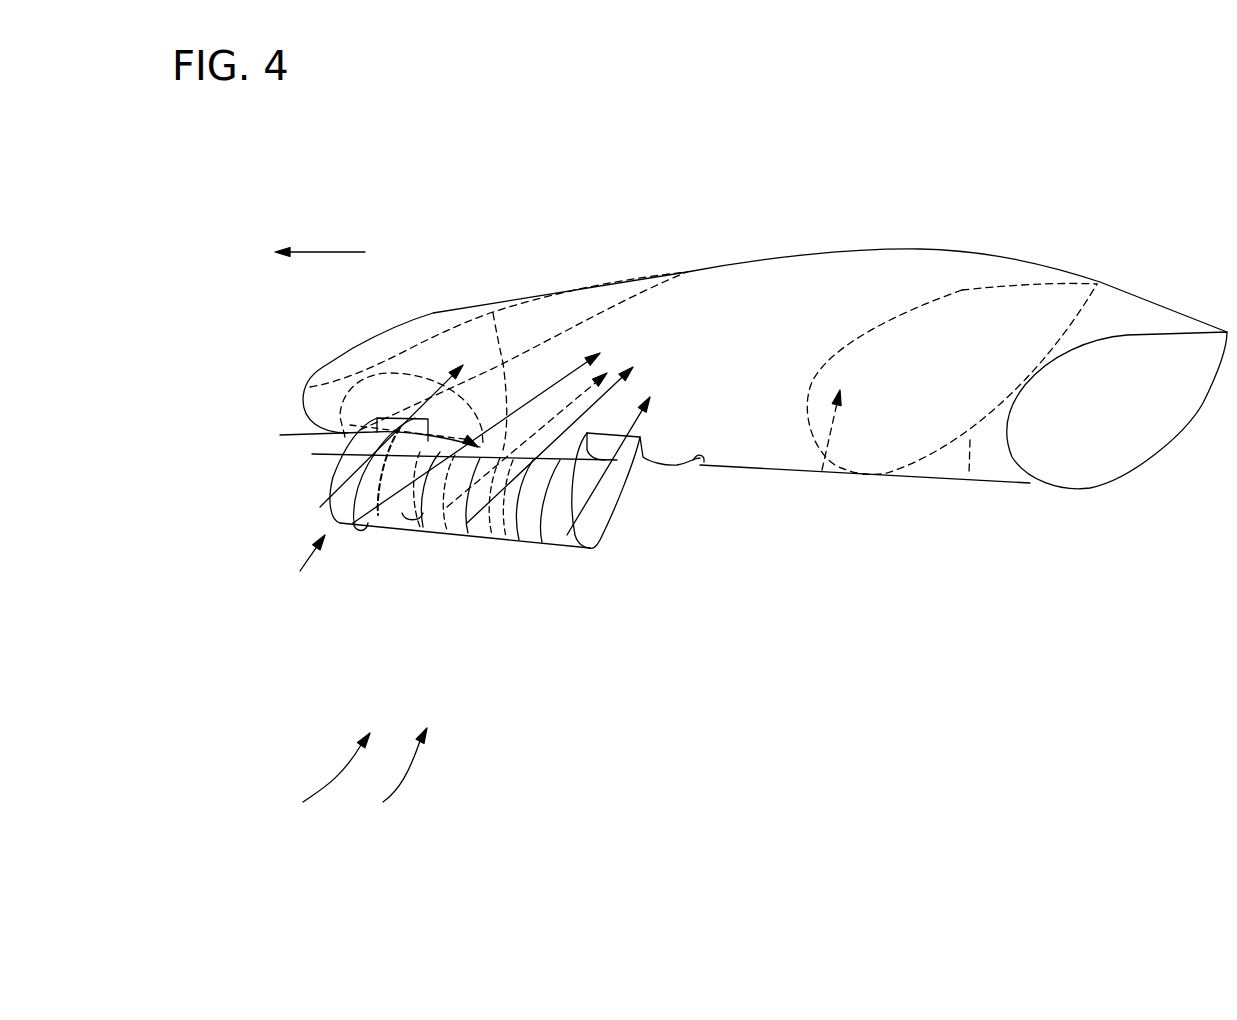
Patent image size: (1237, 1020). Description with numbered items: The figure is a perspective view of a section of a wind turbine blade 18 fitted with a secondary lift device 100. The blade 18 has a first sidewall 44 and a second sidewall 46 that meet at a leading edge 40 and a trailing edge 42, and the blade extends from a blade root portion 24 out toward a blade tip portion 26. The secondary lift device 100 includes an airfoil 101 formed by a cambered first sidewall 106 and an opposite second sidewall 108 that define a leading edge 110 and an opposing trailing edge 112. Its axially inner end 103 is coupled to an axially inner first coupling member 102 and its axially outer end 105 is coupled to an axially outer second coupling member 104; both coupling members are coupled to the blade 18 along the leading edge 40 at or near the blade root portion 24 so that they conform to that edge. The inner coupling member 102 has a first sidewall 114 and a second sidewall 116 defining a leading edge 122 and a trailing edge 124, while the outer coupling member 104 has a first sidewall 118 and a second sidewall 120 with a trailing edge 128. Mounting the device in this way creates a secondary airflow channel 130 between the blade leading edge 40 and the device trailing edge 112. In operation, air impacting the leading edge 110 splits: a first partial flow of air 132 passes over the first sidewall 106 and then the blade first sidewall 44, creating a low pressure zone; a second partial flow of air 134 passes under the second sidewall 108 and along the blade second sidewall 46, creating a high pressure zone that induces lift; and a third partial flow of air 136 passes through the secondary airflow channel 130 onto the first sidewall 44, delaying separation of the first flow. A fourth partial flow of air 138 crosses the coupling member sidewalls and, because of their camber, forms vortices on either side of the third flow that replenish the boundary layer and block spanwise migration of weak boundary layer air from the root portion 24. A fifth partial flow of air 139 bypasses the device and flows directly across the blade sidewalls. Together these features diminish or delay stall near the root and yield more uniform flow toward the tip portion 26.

The blade 18 is at (927, 154).
The blade root portion 24 is at (1146, 495).
The blade tip portion 26 is at (337, 252).
The leading edge 40 is at (822, 475).
The trailing edge 42 is at (1095, 284).
The first sidewall 44 is at (962, 290).
The second sidewall 46 is at (969, 475).
The secondary lift device 100 is at (322, 781).
The airfoil 101 is at (389, 778).
The first coupling member 102 is at (646, 580).
The axially inner end 103 is at (534, 540).
The second coupling member 104 is at (292, 569).
The axially outer end 105 is at (376, 540).
The first sidewall 106 is at (417, 540).
The second sidewall 108 is at (493, 313).
The leading edge 110 is at (437, 543).
The trailing edge 112 is at (442, 456).
The first sidewall 114 is at (627, 530).
The second sidewall 116 is at (657, 505).
The first sidewall 118 is at (343, 478).
The second sidewall 120 is at (363, 537).
The leading edge 122 is at (587, 550).
The trailing edge 124 is at (705, 460).
The trailing edge 128 is at (310, 387).
The secondary airflow channel 130 is at (357, 433).
The first partial flow of air 132 is at (470, 537).
The second partial flow of air 134 is at (506, 537).
The third partial flow of air 136 is at (522, 540).
The fourth partial flow of air 138 is at (355, 537).
The fifth partial flow of air 139 is at (773, 470).